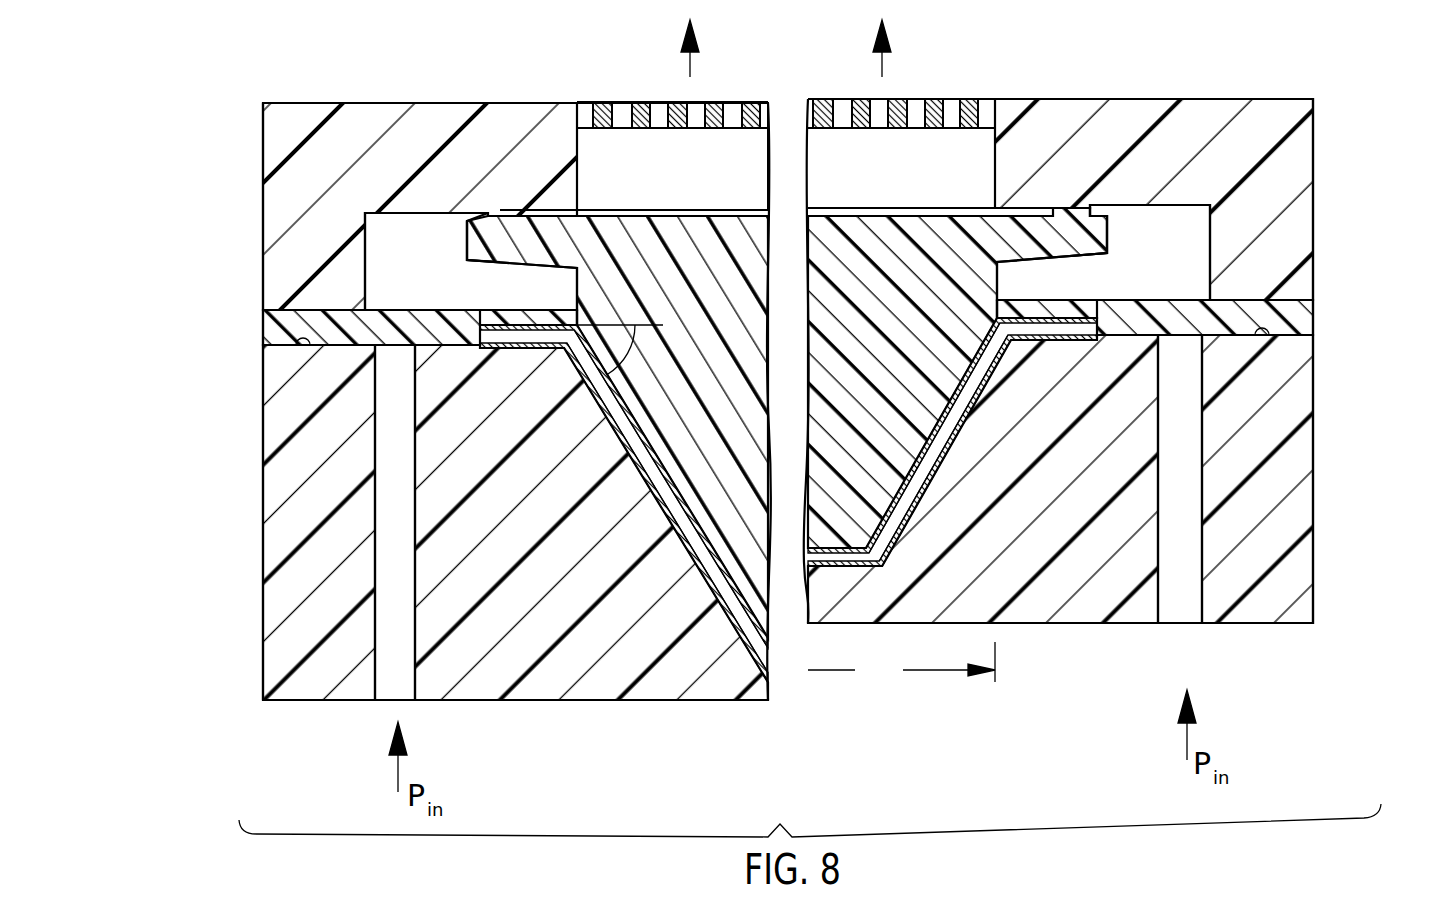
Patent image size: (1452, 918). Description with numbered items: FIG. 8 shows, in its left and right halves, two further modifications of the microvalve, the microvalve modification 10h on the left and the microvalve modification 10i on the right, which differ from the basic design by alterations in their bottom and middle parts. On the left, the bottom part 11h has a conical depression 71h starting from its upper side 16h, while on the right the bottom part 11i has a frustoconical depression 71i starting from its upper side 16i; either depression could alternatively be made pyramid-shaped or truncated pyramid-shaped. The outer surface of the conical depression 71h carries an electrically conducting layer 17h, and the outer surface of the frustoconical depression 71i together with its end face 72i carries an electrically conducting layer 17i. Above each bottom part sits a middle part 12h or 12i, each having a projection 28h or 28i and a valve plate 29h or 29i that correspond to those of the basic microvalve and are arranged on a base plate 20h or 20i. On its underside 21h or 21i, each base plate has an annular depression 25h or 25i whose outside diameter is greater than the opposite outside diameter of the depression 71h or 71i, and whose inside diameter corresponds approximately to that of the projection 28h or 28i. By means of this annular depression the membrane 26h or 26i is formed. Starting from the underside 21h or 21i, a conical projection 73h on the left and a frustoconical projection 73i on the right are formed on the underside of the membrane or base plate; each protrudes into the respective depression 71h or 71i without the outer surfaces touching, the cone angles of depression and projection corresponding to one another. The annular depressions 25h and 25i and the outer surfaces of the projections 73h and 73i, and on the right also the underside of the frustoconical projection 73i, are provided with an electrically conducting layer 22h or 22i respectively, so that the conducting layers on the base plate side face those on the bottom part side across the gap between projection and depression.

The microvalve modification 10h is at (240, 493).
The bottom part 11h is at (290, 578).
The middle part 12h is at (252, 337).
The upper side of bottom part 16h is at (297, 350).
The electrically conducting layer 17h is at (683, 550).
The base plate 20h is at (312, 318).
The underside of base plate 21h is at (343, 345).
The electrically conducting layer 22h is at (680, 497).
The depression 25h is at (513, 335).
The membrane 26h is at (490, 322).
The projection 28h is at (597, 282).
The valve plate 29h is at (480, 240).
The conical depression 71h is at (658, 465).
The conical projection 73h is at (662, 393).
The microvalve modification 10i is at (1337, 512).
The bottom part 11i is at (1293, 563).
The middle part 12i is at (1330, 316).
The upper side of bottom part 16i is at (1283, 332).
The electrically conducting layer 17i is at (965, 408).
The base plate 20i is at (1283, 298).
The underside of base plate 21i is at (1230, 337).
The electrically conducting layer 22i is at (947, 398).
The depression 25i is at (1045, 345).
The membrane 26i is at (1060, 313).
The projection 28i is at (975, 288).
The valve plate 29i is at (1085, 236).
The frustoconical depression 71i is at (950, 450).
The end face 72i is at (846, 555).
The frustoconical projection 73i is at (867, 483).